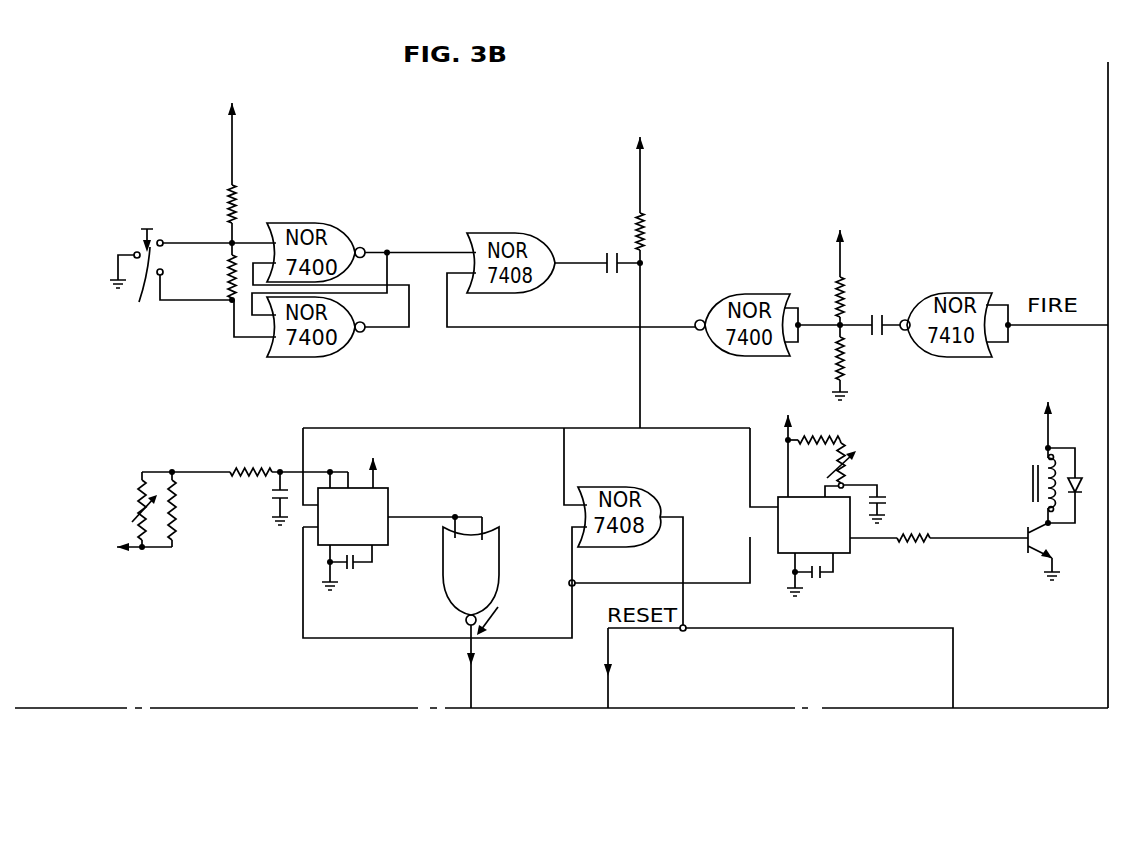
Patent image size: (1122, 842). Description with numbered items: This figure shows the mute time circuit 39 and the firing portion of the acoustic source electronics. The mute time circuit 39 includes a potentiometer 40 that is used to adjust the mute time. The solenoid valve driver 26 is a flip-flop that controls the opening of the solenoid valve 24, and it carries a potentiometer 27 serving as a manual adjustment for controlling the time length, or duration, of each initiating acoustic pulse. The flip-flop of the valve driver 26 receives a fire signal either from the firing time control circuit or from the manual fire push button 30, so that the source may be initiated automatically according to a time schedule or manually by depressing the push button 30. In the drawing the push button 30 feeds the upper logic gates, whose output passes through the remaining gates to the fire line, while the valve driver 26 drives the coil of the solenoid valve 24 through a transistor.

The manual fire push button 30 is at (149, 255).
The potentiometer 40 is at (140, 498).
The mute time circuit 39 is at (413, 587).
The potentiometer 27 is at (847, 450).
The solenoid valve driver 26 is at (857, 533).
The solenoid valve 24 is at (1033, 480).